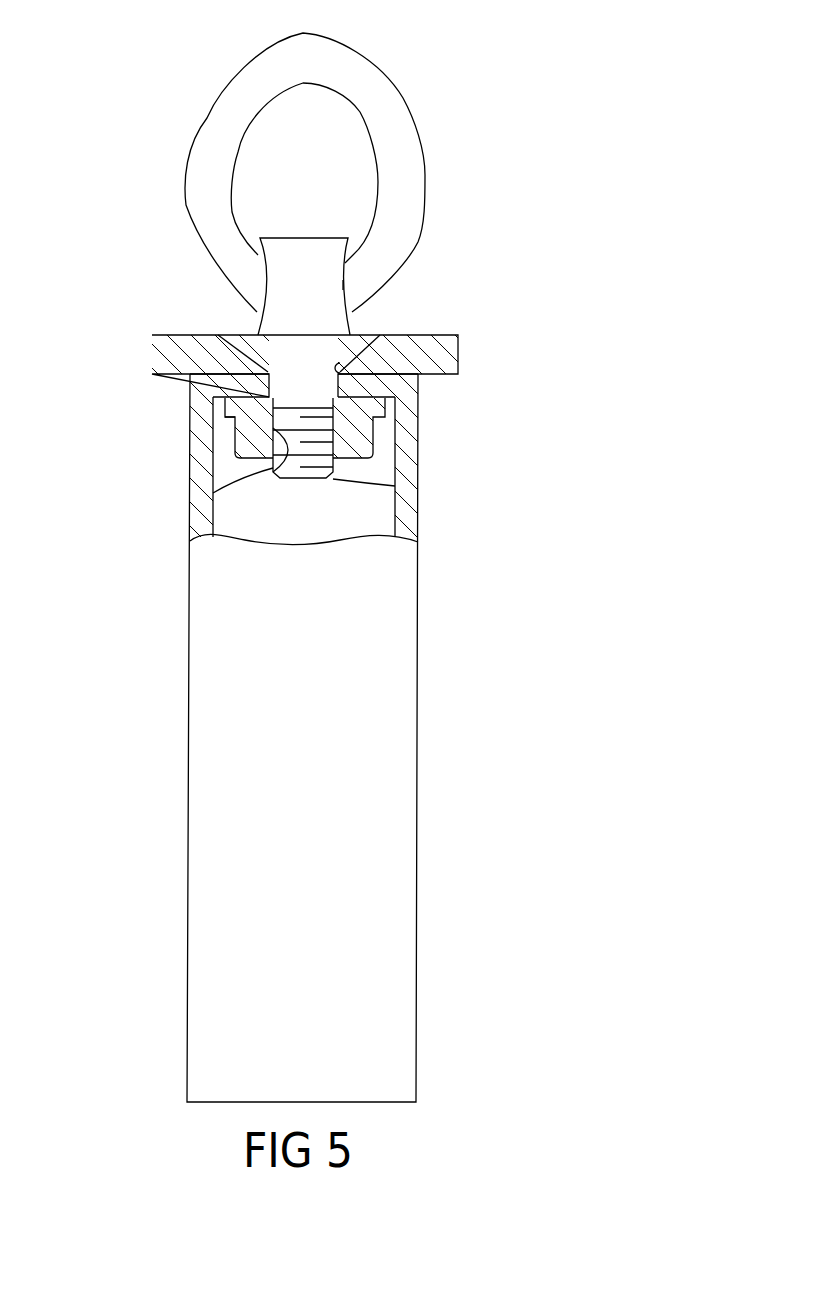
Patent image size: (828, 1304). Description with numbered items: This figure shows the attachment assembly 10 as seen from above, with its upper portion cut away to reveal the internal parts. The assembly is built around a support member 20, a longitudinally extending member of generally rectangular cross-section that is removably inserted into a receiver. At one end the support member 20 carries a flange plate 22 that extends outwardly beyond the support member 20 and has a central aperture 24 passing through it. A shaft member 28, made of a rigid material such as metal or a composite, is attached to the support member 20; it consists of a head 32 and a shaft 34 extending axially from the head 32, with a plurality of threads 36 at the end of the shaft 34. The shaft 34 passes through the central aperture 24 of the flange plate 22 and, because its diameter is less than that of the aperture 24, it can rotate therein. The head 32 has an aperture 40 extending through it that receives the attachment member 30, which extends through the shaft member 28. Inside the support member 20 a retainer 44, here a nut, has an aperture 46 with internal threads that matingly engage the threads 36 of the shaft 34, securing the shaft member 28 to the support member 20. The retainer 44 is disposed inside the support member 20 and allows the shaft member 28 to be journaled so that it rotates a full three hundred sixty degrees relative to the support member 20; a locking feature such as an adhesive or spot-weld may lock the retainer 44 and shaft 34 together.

The attachment assembly 10 is at (103, 93).
The support member 20 is at (418, 741).
The flange plate 22 is at (433, 345).
The central aperture 24 is at (380, 335).
The shaft member 28 is at (218, 335).
The attachment member 30 is at (363, 75).
The head 32 is at (305, 236).
The shaft 34 is at (373, 447).
The threads 36 is at (315, 460).
The aperture 40 is at (344, 285).
The retainer 44 is at (230, 424).
The aperture 46 is at (213, 493).